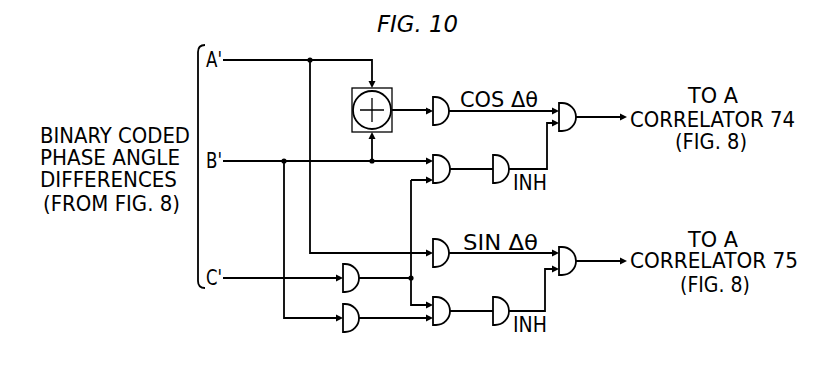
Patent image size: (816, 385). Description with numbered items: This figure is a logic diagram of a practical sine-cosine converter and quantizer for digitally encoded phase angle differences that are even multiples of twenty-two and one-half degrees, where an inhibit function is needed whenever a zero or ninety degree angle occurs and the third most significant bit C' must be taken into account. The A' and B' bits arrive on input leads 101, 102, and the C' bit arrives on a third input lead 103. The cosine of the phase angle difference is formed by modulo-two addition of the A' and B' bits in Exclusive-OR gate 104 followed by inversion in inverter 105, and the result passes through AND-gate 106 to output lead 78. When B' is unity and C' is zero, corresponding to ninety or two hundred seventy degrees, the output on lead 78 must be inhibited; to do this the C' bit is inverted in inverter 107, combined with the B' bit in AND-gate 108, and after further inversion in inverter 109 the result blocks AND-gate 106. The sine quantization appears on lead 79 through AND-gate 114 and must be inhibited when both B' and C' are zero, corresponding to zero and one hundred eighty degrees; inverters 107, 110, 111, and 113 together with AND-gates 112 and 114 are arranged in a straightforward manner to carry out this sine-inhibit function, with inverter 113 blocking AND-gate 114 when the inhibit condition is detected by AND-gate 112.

The input lead 101 is at (271, 61).
The input lead 102 is at (271, 162).
The input line C' (binary coded phase angle difference bit) 103 is at (271, 279).
The Exclusive-OR gate 104 is at (379, 88).
The inverter 105 is at (447, 121).
The AND-gate 106 is at (567, 131).
The inverter 107 is at (357, 287).
The AND-gate 108 is at (447, 178).
The inverter 109 is at (500, 157).
The inverter 110 is at (447, 263).
The inverter 111 is at (357, 327).
The AND-gate 112 is at (447, 322).
The inverter 113 is at (500, 307).
The AND-gate 114 is at (567, 275).
The lead 78 is at (604, 115).
The lead 79 is at (605, 258).